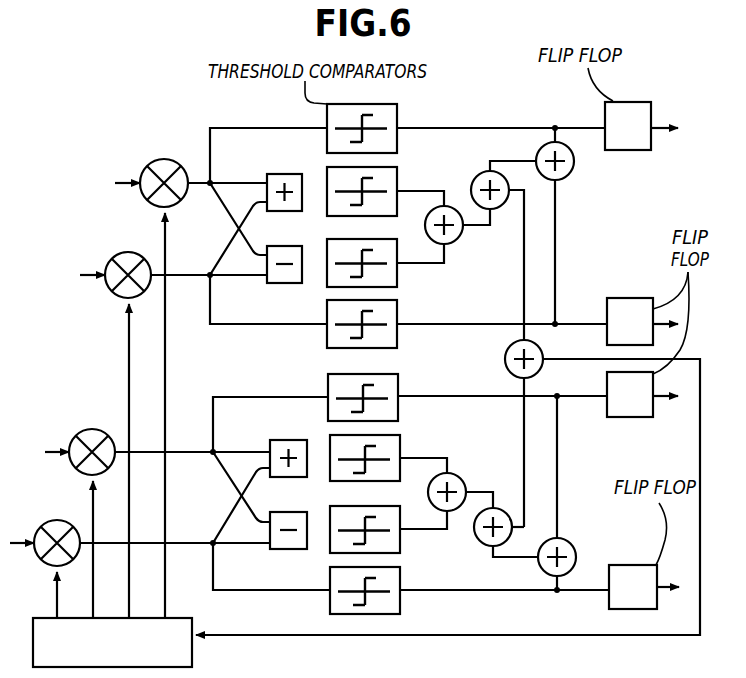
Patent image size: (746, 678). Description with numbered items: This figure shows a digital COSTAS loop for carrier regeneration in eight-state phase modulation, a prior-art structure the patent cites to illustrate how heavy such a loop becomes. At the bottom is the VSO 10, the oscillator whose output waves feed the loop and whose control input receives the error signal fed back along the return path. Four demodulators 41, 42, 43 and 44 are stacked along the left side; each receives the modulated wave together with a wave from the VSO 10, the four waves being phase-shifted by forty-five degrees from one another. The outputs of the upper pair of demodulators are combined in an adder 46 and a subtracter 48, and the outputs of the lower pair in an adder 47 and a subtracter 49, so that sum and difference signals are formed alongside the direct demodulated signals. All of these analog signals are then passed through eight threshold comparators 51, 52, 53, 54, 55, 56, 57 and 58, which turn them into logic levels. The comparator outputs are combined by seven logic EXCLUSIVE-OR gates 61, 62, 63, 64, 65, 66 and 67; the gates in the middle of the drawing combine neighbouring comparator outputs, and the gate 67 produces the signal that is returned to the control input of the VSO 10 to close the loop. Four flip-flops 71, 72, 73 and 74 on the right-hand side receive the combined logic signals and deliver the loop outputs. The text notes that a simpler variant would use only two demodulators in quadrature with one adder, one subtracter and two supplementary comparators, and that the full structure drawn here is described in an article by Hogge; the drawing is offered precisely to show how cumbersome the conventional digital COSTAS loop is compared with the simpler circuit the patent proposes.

The VSO 10 is at (40, 618).
The demodulator 41 is at (170, 157).
The demodulator 42 is at (128, 252).
The demodulator 43 is at (93, 429).
The demodulator 44 is at (57, 520).
The adder 46 is at (296, 174).
The adder 47 is at (299, 440).
The subtracter 48 is at (296, 246).
The subtracter 49 is at (299, 512).
The threshold comparator 51 is at (399, 116).
The threshold comparator 52 is at (399, 176).
The threshold comparator 53 is at (399, 256).
The threshold comparator 54 is at (399, 315).
The threshold comparator 55 is at (400, 387).
The threshold comparator 56 is at (402, 449).
The threshold comparator 57 is at (402, 522).
The threshold comparator 58 is at (403, 586).
The logic EXCLUSIVE-OR gate 61 is at (569, 175).
The logic EXCLUSIVE-OR gate 62 is at (451, 243).
The logic EXCLUSIVE-OR gate 63 is at (482, 173).
The logic EXCLUSIVE-OR gate 64 is at (573, 544).
The logic EXCLUSIVE-OR gate 65 is at (459, 475).
The logic EXCLUSIVE-OR gate 66 is at (484, 548).
The logic EXCLUSIVE-OR gate 67 is at (505, 359).
The flip-flop 71 is at (627, 150).
The flip-flop 72 is at (625, 298).
The flip-flop 73 is at (630, 417).
The flip-flop 74 is at (632, 565).